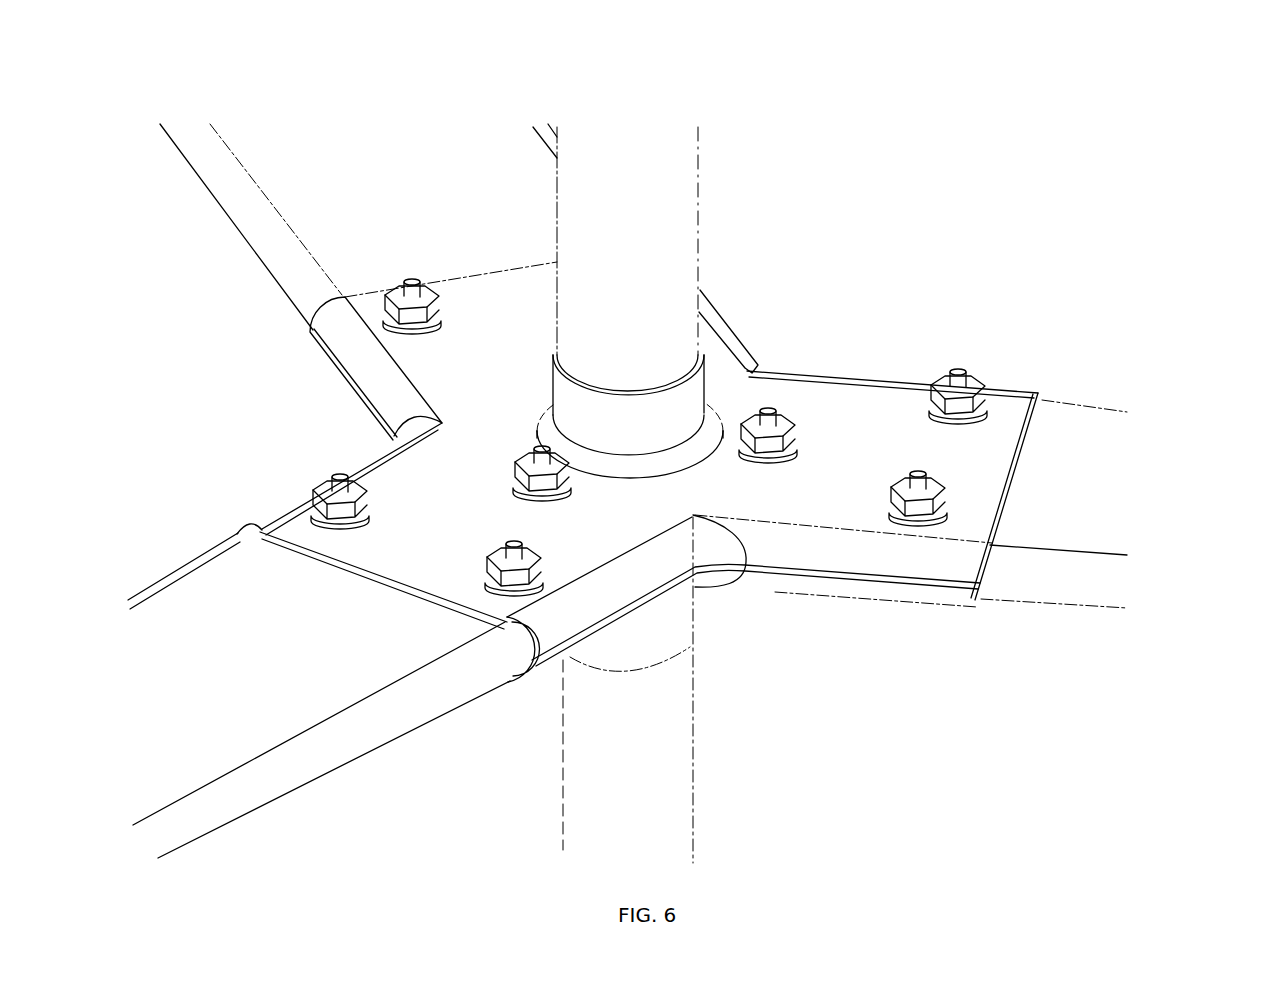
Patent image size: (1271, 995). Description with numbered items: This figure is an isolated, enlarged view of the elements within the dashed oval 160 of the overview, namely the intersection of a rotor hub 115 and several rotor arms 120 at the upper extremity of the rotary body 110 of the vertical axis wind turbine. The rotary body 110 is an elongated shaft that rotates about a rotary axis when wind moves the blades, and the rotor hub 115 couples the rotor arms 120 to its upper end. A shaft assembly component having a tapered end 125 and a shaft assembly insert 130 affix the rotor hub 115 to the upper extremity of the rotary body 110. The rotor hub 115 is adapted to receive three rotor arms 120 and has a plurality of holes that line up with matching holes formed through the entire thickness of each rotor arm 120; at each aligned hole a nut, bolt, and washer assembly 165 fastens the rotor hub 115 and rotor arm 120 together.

The rotary body 110 is at (657, 773).
The rotor hub 115 is at (807, 397).
The rotor arm 120 is at (307, 223).
The shaft assembly component having a tapered end 125 is at (668, 248).
The shaft assembly insert 130 is at (652, 645).
The dashed oval 160 is at (1133, 200).
The nut, bolt, and washer assembly 165 is at (432, 308).